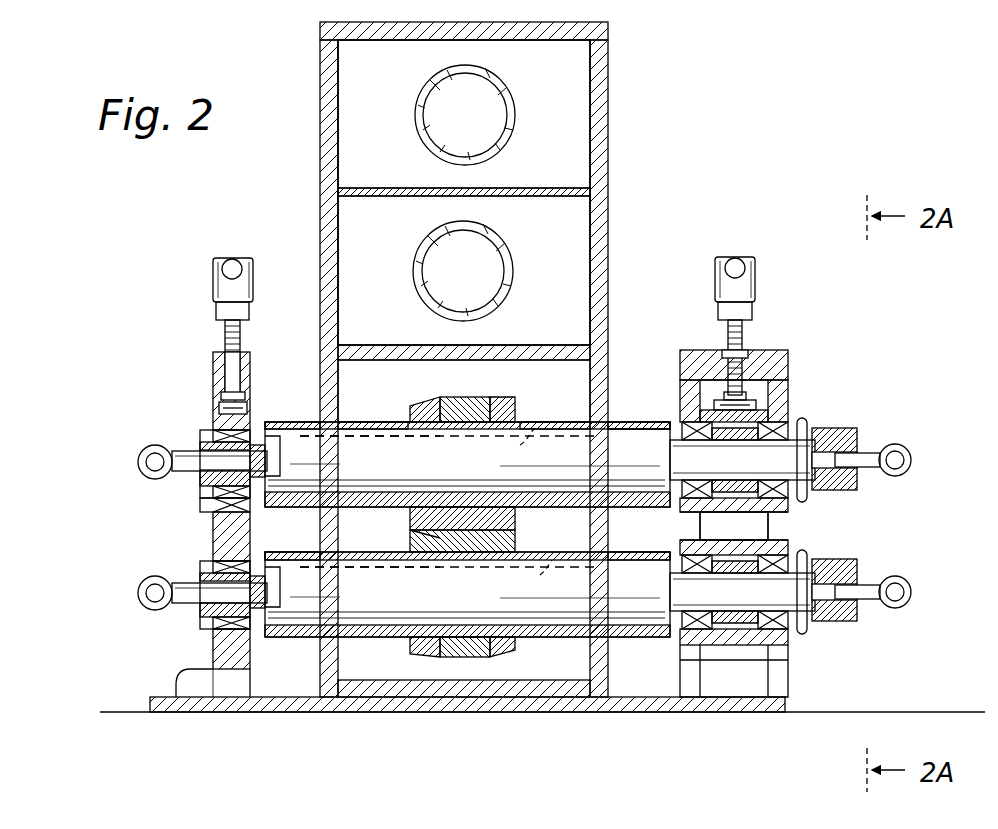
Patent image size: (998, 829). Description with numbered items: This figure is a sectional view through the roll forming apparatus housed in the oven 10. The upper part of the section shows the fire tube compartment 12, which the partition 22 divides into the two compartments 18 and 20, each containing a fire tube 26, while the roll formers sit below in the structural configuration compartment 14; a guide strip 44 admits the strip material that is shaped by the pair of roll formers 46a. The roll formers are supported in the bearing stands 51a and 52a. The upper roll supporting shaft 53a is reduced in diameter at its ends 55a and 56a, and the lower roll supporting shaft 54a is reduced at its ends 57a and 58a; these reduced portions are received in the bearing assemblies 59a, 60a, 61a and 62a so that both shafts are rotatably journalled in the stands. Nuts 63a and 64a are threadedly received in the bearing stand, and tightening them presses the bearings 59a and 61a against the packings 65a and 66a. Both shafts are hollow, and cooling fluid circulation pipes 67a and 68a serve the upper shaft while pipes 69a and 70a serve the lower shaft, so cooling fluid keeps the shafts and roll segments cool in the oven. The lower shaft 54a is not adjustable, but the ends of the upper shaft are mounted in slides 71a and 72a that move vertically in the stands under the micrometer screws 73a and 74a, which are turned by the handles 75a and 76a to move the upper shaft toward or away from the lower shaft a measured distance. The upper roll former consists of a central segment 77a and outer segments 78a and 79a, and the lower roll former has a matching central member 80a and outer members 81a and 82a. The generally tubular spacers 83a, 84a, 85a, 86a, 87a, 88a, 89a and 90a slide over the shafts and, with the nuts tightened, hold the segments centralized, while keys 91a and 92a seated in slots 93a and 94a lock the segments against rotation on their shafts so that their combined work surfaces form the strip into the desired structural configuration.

The oven 10 is at (611, 192).
The fire tube compartment 12 is at (392, 162).
The structural configuration compartment 14 is at (378, 380).
The compartment 18 is at (559, 241).
The compartment 20 is at (562, 110).
The partition 22 is at (553, 190).
The tube 26 is at (500, 86).
The guide strip 44 is at (547, 350).
The roll former 46a is at (636, 440).
The bearing stand 51a is at (790, 372).
The bearing stand 52a is at (213, 396).
The upper roll supporting shaft 53a is at (578, 467).
The lower roll supporting shaft 54a is at (593, 592).
The reduced diameter end 55a is at (258, 465).
The reduced diameter end 56a is at (751, 467).
The reduced diameter end 57a is at (258, 594).
The reduced diameter end 58a is at (751, 600).
The bearing assembly 59a is at (212, 505).
The bearing assembly 60a is at (762, 418).
The bearing assembly 61a is at (212, 632).
The bearing assembly 62a is at (765, 558).
The nut 63a is at (205, 442).
The nut 64a is at (205, 575).
The packing 65a is at (266, 450).
The packing 66a is at (266, 579).
The cooling fluid circulation pipe 67a is at (178, 452).
The cooling fluid circulation pipe 68a is at (898, 444).
The cooling fluid circulation pipe 69a is at (138, 590).
The cooling fluid circulation pipe 70a is at (898, 576).
The slide 71a is at (770, 400).
The slide 72a is at (222, 412).
The micrometer screw 73a is at (742, 332).
The micrometer screw 74a is at (225, 335).
The handle 75a is at (745, 258).
The handle 76a is at (236, 258).
The central segment 77a is at (468, 398).
The outer segment 78a is at (428, 403).
The outer segment 79a is at (503, 400).
The central member 80a is at (470, 658).
The outer member 81a is at (418, 655).
The outer member 82a is at (505, 650).
The tubular spacer 83a is at (360, 420).
The tubular spacer 84a is at (292, 420).
The tubular spacer 85a is at (546, 420).
The tubular spacer 86a is at (626, 420).
The tubular spacer 87a is at (360, 552).
The tubular spacer 88a is at (292, 552).
The tubular spacer 89a is at (545, 552).
The tubular spacer 90a is at (636, 552).
The key 91a is at (445, 437).
The key 92a is at (445, 566).
The slot 93a is at (520, 446).
The slot 94a is at (540, 574).